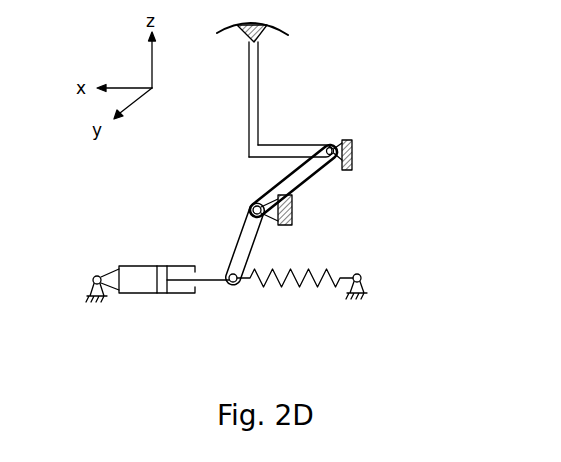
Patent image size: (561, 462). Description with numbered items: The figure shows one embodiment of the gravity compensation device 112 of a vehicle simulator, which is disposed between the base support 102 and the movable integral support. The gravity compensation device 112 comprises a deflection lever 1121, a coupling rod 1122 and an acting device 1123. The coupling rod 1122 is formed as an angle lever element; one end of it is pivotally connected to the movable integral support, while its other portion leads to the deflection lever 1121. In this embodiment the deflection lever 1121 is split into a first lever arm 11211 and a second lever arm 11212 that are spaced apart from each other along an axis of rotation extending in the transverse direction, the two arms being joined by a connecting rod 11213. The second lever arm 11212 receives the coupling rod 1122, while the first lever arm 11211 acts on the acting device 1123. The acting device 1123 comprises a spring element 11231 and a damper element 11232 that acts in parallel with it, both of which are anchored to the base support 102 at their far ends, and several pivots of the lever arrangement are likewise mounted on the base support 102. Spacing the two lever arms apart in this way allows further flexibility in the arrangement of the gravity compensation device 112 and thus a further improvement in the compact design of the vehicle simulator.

The gravity compensation device 112 is at (91, 342).
The coupling rod 1122 is at (247, 97).
The deflection lever 1121 is at (232, 175).
The second lever arm 11212 is at (279, 146).
The connecting rod 11213 is at (270, 182).
The first lever arm 11211 is at (242, 232).
The acting device 1123 is at (227, 320).
The damper element 11232 is at (145, 295).
The spring element 11231 is at (305, 282).
The base support 102 is at (353, 150).